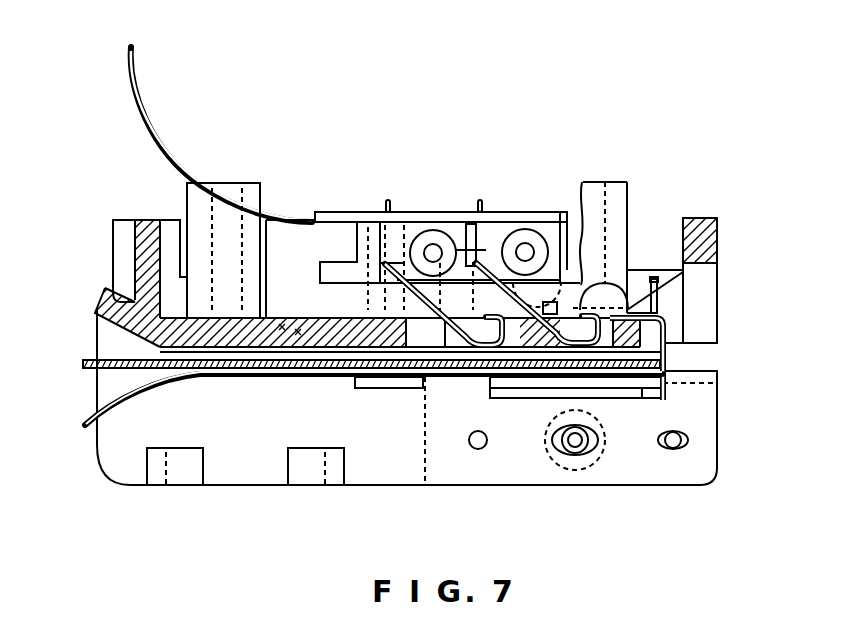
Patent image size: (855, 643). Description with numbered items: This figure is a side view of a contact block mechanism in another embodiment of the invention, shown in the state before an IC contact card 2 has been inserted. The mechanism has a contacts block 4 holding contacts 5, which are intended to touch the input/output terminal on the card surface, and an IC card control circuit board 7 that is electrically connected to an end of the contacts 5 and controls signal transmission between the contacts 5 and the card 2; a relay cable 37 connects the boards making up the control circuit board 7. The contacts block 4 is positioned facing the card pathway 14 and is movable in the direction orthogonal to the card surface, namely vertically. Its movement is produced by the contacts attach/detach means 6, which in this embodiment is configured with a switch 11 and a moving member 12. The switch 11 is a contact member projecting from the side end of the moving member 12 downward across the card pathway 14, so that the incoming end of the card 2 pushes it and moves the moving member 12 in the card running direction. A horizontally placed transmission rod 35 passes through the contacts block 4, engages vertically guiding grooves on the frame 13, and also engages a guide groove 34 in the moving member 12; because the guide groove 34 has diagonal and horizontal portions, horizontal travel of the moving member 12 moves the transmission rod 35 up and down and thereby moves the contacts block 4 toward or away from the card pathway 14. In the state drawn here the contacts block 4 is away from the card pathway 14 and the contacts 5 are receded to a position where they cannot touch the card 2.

The IC contact card 2 is at (125, 358).
The contacts block 4 is at (500, 240).
The contacts 5 is at (437, 340).
The contacts attach/detach means 6 is at (560, 127).
The IC card control circuit board 7 is at (340, 210).
The switch 11 is at (665, 322).
The moving member 12 is at (604, 283).
The frame 13 is at (122, 235).
The card pathway 14 is at (132, 373).
The guide groove 34 is at (472, 252).
The transmission rod 35 is at (528, 247).
The relay cable 37 is at (140, 102).